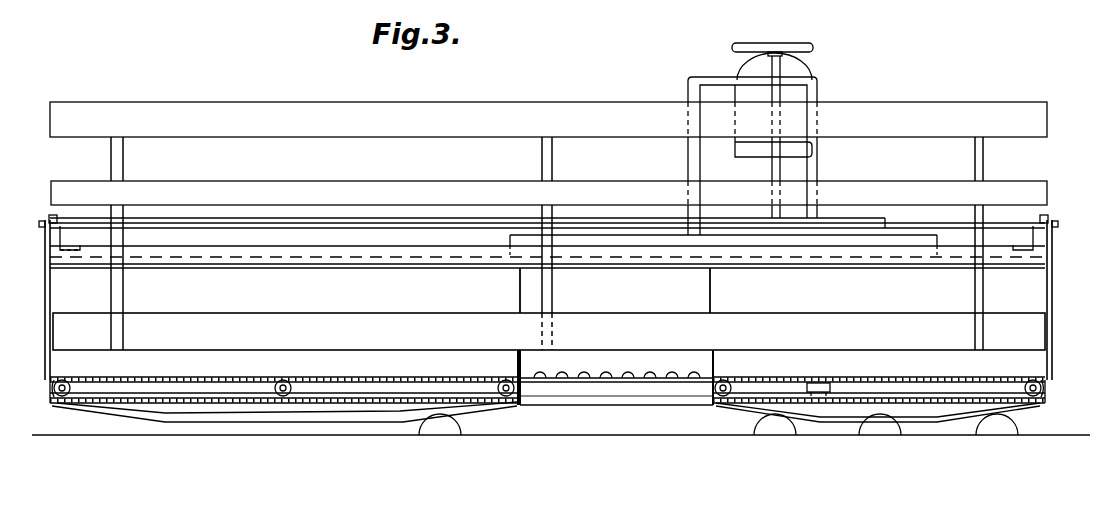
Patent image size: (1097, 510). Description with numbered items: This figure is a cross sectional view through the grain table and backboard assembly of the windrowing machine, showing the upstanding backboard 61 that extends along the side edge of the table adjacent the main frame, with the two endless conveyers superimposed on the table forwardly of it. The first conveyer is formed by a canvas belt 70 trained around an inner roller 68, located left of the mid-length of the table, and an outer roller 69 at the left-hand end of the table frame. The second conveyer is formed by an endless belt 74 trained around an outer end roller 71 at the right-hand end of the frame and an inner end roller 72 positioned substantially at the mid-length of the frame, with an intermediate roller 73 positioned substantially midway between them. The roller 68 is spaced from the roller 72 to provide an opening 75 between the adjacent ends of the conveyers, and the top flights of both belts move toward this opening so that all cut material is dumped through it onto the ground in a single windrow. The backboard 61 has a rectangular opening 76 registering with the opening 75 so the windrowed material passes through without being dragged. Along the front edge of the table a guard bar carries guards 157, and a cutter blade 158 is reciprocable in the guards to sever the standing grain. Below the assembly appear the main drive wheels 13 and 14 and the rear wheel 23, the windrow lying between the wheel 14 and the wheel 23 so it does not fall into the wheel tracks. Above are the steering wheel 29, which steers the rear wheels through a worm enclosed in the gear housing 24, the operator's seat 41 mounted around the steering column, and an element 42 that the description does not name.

The main drive wheel 13 is at (979, 423).
The main drive wheel 14 is at (453, 426).
The rear wheel 23 is at (770, 423).
The gear housing 24 is at (880, 428).
The steering wheel 29 is at (812, 50).
The operator's seat 41 is at (815, 74).
The screw shaft 42 is at (817, 170).
The backboard 61 is at (57, 300).
The inner roller 68 is at (727, 400).
The outer roller 69 is at (1037, 401).
The belt 70 is at (889, 378).
The outer end roller 71 is at (78, 405).
The inner end roller 72 is at (505, 404).
The intermediate roller 73 is at (302, 403).
The endless belt 74 is at (420, 378).
The opening 75 is at (588, 402).
The rectangular opening 76 is at (660, 402).
The guards 157 is at (598, 380).
The cutter blade 158 is at (650, 378).